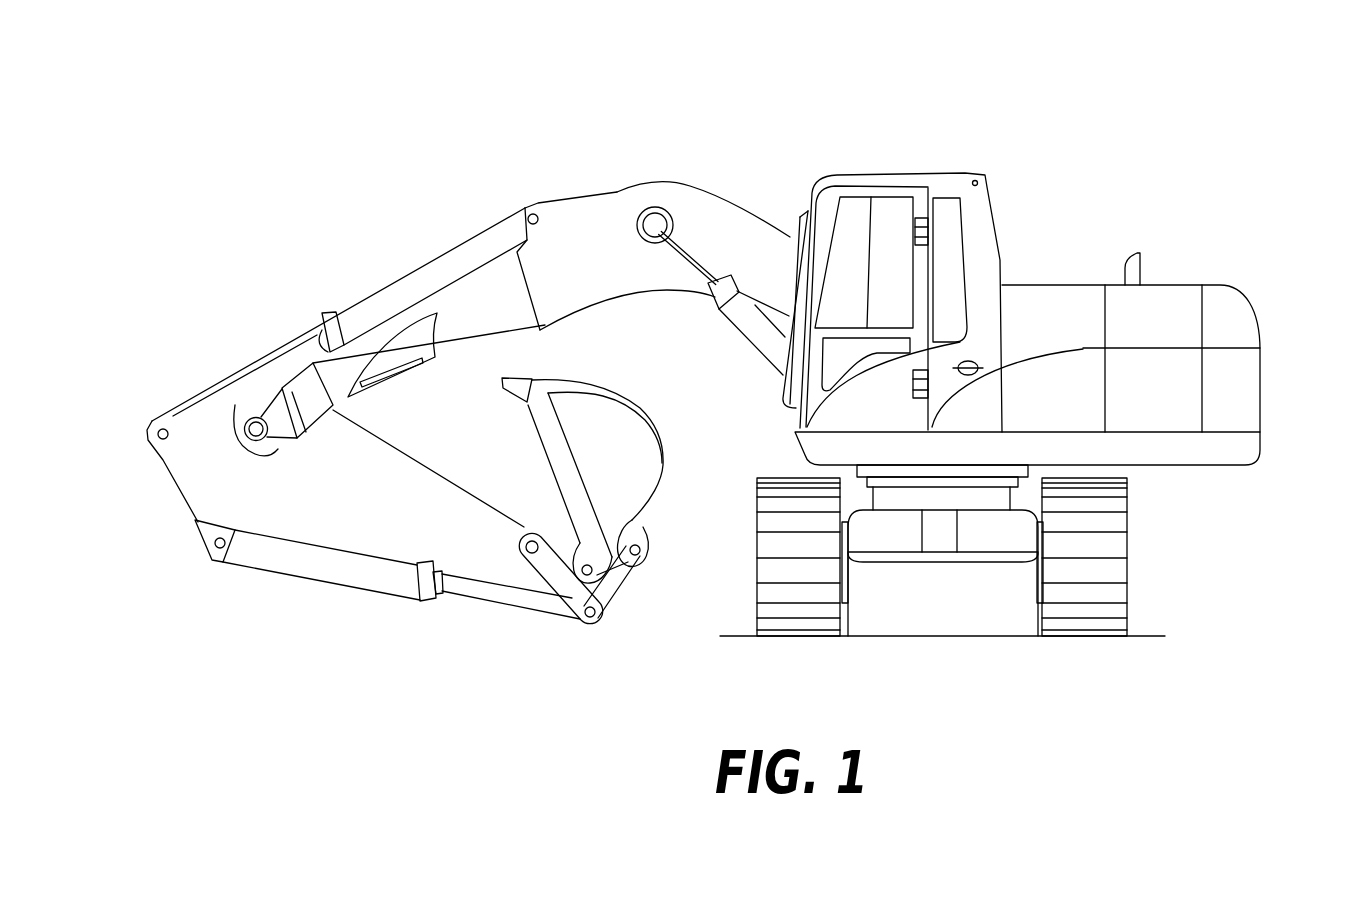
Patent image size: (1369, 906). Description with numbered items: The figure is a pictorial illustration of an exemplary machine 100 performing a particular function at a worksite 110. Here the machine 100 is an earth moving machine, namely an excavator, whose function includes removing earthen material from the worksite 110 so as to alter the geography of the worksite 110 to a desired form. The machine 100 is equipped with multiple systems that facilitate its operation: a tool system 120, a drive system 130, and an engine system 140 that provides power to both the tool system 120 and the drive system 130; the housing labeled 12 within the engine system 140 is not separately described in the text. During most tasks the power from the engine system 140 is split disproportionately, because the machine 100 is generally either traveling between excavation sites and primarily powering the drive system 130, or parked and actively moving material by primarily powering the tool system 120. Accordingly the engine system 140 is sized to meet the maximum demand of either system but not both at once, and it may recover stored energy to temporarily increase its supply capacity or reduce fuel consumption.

The machine 100 is at (1174, 108).
The worksite 110 is at (287, 206).
The tool system 120 is at (692, 657).
The drive system 130 is at (1190, 472).
The engine system 140 is at (1260, 470).
The engine compartment 12 is at (1162, 393).